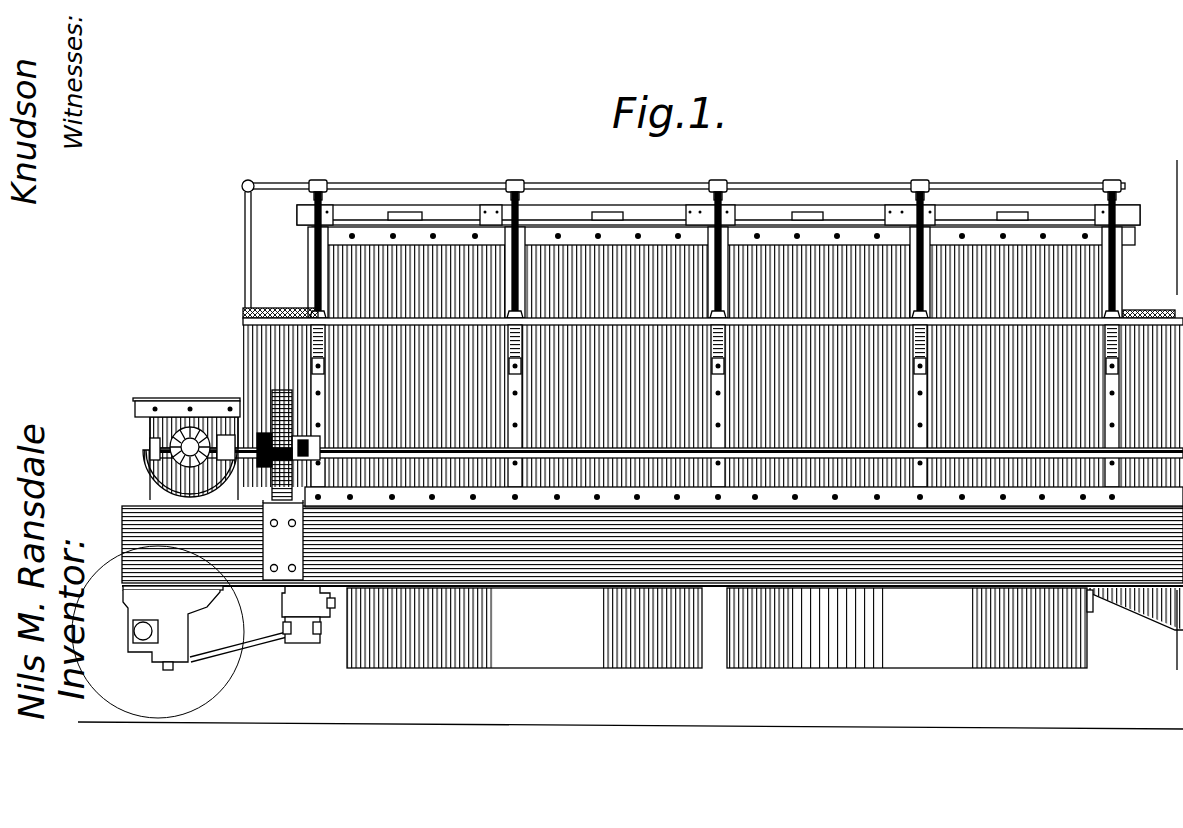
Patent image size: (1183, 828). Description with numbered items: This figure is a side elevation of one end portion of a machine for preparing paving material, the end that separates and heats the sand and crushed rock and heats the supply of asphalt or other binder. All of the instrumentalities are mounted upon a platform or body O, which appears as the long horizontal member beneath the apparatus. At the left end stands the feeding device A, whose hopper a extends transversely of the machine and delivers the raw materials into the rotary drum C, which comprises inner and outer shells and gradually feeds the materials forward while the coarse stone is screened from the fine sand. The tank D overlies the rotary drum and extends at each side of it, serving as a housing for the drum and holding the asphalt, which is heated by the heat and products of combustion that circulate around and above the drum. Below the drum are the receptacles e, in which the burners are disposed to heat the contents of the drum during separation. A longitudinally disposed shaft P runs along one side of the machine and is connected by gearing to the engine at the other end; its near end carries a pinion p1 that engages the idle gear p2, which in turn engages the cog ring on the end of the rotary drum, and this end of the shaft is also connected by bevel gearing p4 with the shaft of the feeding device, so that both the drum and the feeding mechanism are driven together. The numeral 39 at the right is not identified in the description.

The hopper a is at (758, 222).
The rotary drum C is at (245, 318).
The tank D is at (713, 416).
The longitudinally disposed shaft P is at (590, 450).
The platform or body O is at (725, 573).
The receptacles e is at (518, 664).
The end bracket 39 is at (1137, 613).
The feeding device A is at (173, 400).
The bevel gearing p4 is at (185, 450).
The idle gear p2 is at (270, 393).
The pinion p1 is at (285, 452).